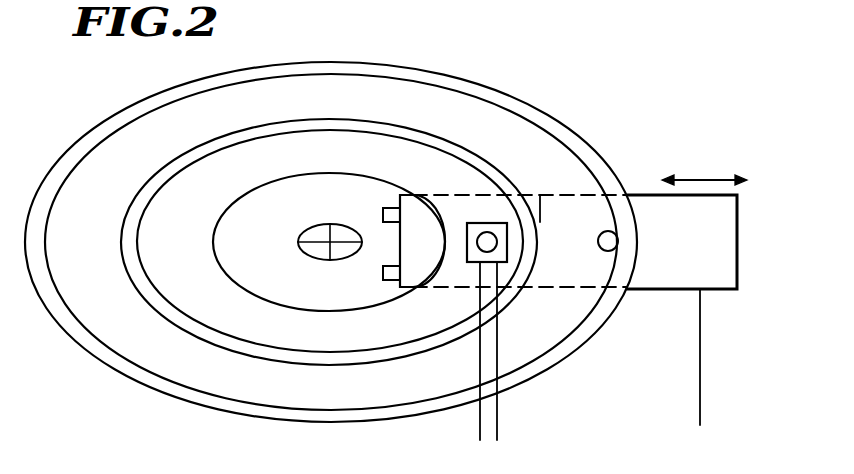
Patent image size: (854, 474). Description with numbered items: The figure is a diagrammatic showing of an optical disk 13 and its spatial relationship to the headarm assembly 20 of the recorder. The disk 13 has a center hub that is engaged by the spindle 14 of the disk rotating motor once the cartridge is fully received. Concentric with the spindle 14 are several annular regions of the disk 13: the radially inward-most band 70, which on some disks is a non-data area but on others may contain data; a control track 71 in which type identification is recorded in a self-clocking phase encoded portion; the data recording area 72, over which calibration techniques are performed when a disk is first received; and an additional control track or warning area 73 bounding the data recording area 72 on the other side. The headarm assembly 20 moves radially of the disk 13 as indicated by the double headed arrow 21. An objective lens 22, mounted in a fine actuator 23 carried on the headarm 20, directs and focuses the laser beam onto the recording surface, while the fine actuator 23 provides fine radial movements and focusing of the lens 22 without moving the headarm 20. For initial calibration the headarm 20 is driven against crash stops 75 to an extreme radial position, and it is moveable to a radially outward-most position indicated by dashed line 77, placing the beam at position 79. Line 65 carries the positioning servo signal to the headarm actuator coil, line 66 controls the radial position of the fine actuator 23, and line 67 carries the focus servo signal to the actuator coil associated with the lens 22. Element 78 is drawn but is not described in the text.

The optical disk 13 is at (163, 392).
The spindle 14 is at (318, 232).
The headarm assembly 20 is at (656, 290).
The double headed arrow 21 is at (704, 180).
The objective lens 22 is at (490, 232).
The fine actuator 23 is at (470, 256).
The line 65 is at (700, 386).
The line 66 is at (499, 416).
The line 67 is at (480, 426).
The band 70 is at (346, 165).
The control track 71 is at (227, 138).
The data recording area 72 is at (346, 110).
The warning area 73 is at (522, 114).
The crash stops 75 is at (384, 212).
The dashed line 77 is at (542, 205).
The head arm 78 is at (396, 247).
The position 79 is at (599, 241).